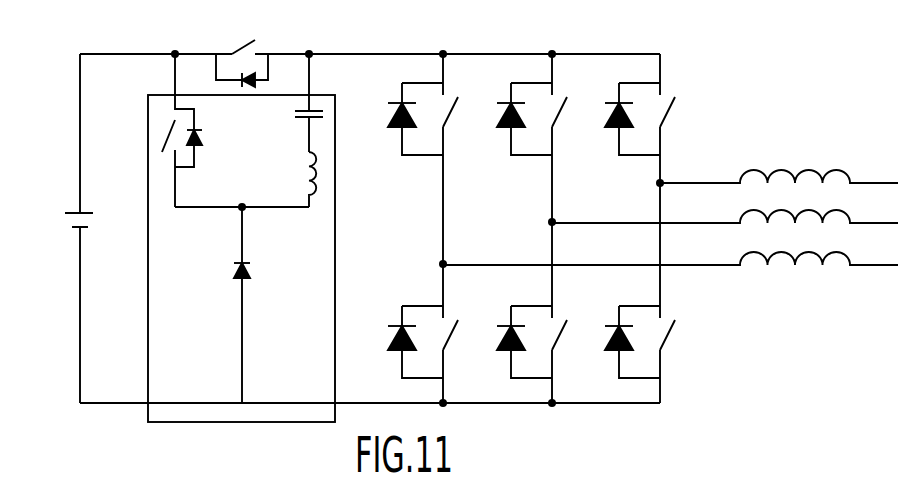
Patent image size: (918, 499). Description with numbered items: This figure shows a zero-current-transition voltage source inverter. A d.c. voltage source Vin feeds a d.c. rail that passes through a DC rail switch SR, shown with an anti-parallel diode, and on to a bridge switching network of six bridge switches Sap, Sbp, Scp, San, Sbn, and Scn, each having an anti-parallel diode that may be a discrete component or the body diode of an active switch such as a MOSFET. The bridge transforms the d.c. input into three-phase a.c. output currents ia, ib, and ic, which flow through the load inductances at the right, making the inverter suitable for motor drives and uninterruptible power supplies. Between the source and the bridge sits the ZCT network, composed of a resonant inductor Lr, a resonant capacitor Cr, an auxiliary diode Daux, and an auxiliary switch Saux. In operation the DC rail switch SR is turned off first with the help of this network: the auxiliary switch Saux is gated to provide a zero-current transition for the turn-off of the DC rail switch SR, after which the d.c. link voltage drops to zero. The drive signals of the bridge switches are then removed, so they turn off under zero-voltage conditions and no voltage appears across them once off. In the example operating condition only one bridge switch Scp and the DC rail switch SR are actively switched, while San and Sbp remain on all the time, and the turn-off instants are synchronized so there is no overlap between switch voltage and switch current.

The d.c. voltage source Vin is at (60, 217).
The DC rail switch SR is at (242, 48).
The auxiliary switch Saux is at (196, 130).
The resonant capacitor Cr is at (297, 103).
The resonant inductor Lr is at (299, 179).
The auxiliary diode Daux is at (265, 305).
The bridge switch Scp is at (435, 159).
The bridge switch Sbp is at (544, 138).
The bridge switch Sap is at (652, 118).
The bridge switch Scn is at (435, 333).
The bridge switch Sbn is at (544, 312).
The bridge switch San is at (652, 293).
The three-phase a.c. current ia is at (800, 163).
The three-phase a.c. current ib is at (800, 203).
The three-phase a.c. current ic is at (800, 246).